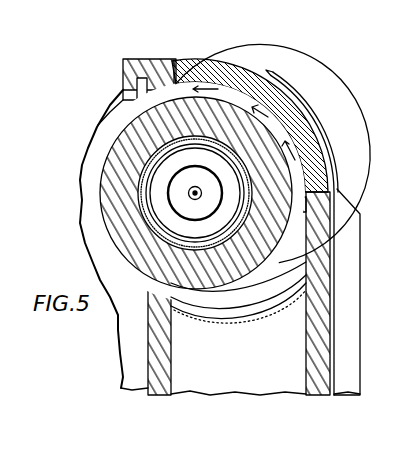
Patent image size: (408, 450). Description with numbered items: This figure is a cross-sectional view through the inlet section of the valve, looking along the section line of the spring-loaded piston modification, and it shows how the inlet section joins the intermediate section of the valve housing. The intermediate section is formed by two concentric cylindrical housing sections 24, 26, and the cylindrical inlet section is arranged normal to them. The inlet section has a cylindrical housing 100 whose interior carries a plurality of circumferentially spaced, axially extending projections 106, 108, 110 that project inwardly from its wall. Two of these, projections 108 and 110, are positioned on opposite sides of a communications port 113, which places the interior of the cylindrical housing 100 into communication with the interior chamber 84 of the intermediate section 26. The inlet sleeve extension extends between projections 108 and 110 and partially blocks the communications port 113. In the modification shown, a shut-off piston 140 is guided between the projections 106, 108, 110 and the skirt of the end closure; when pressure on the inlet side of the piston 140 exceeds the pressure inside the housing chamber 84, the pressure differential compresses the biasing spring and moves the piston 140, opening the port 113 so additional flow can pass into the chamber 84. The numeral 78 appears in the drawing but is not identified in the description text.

The cylindrical housing section 24 is at (148, 361).
The cylindrical housing section 26 is at (333, 302).
The housing side wall 78 is at (93, 150).
The interior chamber 84 is at (301, 340).
The cylindrical housing 100 is at (157, 60).
The projection 106 is at (173, 60).
The projection 108 is at (331, 172).
The projection 110 is at (149, 287).
The communications port 113 is at (177, 322).
The shut-off piston 140 is at (233, 73).